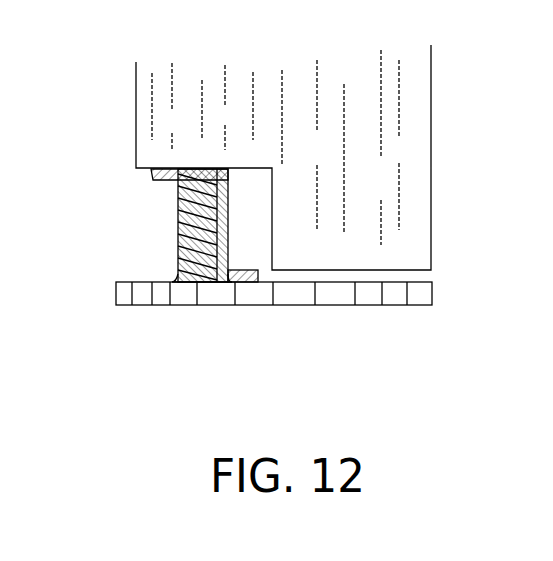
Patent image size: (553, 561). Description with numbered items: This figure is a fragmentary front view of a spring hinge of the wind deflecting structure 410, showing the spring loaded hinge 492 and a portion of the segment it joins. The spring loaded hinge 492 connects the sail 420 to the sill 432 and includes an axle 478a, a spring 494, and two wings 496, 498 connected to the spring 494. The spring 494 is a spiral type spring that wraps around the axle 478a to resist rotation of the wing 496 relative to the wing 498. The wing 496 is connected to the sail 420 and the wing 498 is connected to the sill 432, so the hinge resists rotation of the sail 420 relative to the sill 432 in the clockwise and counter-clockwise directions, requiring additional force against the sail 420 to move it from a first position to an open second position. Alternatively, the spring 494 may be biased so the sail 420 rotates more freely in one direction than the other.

The sail 420 is at (412, 149).
The wing 496 is at (152, 177).
The axle 478a is at (215, 170).
The spring loaded hinge 492 is at (148, 233).
The spring 494 is at (182, 261).
The wing 498 is at (238, 283).
The sill 432 is at (369, 298).
The wind deflecting structure 410 is at (106, 334).